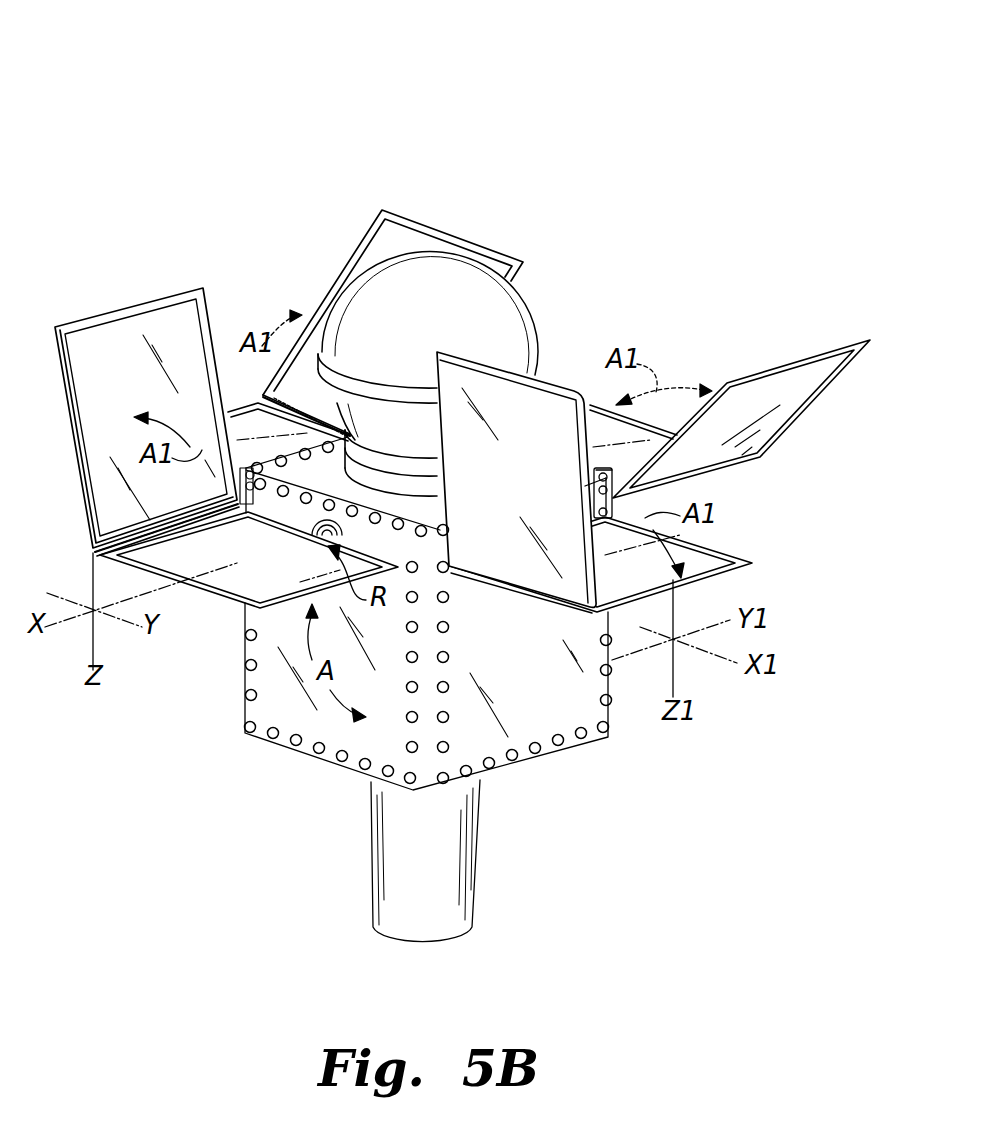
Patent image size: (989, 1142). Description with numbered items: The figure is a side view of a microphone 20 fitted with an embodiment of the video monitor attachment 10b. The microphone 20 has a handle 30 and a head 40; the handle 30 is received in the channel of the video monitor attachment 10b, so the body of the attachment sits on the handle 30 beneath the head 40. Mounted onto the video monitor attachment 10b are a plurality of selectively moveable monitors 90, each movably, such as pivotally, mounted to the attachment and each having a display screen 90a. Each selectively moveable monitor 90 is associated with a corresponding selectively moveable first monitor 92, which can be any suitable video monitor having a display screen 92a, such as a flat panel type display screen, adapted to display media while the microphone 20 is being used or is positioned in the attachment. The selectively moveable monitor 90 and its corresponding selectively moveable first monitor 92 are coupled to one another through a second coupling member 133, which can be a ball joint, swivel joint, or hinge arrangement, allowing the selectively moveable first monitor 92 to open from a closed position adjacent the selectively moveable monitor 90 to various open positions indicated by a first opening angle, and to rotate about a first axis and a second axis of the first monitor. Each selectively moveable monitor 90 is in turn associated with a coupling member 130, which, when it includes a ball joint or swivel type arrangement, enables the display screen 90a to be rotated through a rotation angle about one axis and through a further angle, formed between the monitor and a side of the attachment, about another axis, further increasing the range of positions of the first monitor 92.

The video monitor attachment 10b is at (200, 72).
The microphone 20 is at (556, 305).
The handle 30 is at (446, 897).
The head 40 is at (449, 336).
The selectively moveable monitor 90 is at (812, 587).
The display screen 90a is at (262, 425).
The selectively moveable first monitor 92 is at (142, 300).
The display screen 92a is at (152, 403).
The coupling member 130 is at (318, 533).
The second coupling member 133 is at (300, 392).